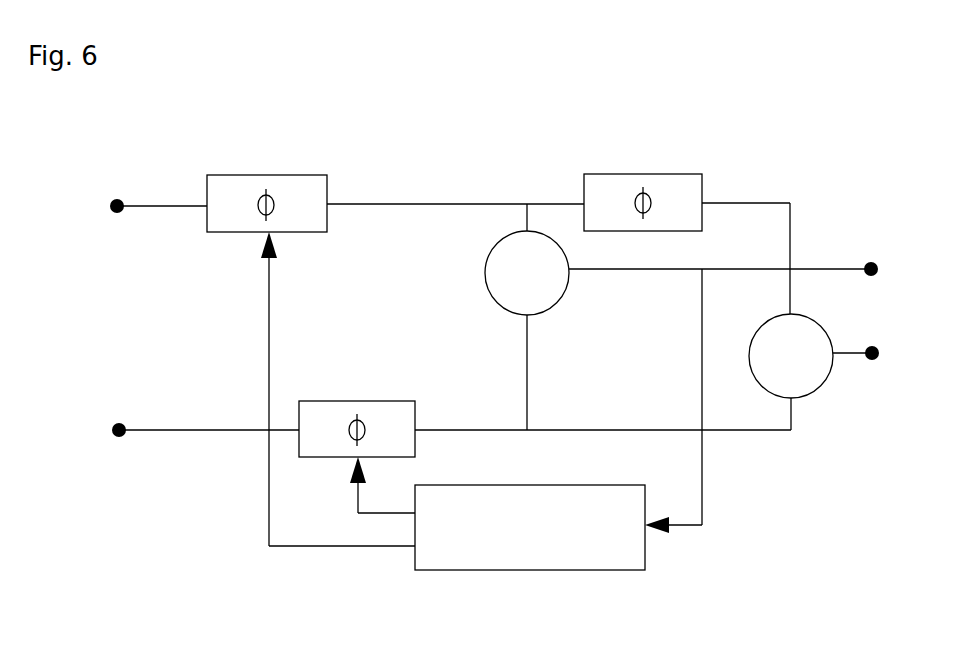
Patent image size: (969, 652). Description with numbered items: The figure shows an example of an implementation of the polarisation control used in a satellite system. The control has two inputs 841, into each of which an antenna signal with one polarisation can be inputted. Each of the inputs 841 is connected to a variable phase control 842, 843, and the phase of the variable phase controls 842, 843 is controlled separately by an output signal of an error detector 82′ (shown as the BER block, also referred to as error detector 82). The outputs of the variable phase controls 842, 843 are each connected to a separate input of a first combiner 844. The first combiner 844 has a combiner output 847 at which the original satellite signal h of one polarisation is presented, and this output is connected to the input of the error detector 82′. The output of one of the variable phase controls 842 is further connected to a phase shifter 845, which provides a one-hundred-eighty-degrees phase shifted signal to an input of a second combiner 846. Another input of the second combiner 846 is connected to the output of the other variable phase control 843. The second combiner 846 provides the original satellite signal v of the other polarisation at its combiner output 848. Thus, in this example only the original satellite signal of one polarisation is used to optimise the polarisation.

The inputs 841 is at (117, 213).
The variable phase control 842 is at (307, 190).
The variable phase control 843 is at (402, 410).
The first combiner 844 is at (546, 312).
The phase shifter 845 is at (694, 178).
The second combiner 846 is at (802, 399).
The combiner output 847 is at (871, 258).
The combiner output 848 is at (872, 365).
The error detector 82′ is at (530, 558).
The BER measurement unit 82 is at (526, 557).